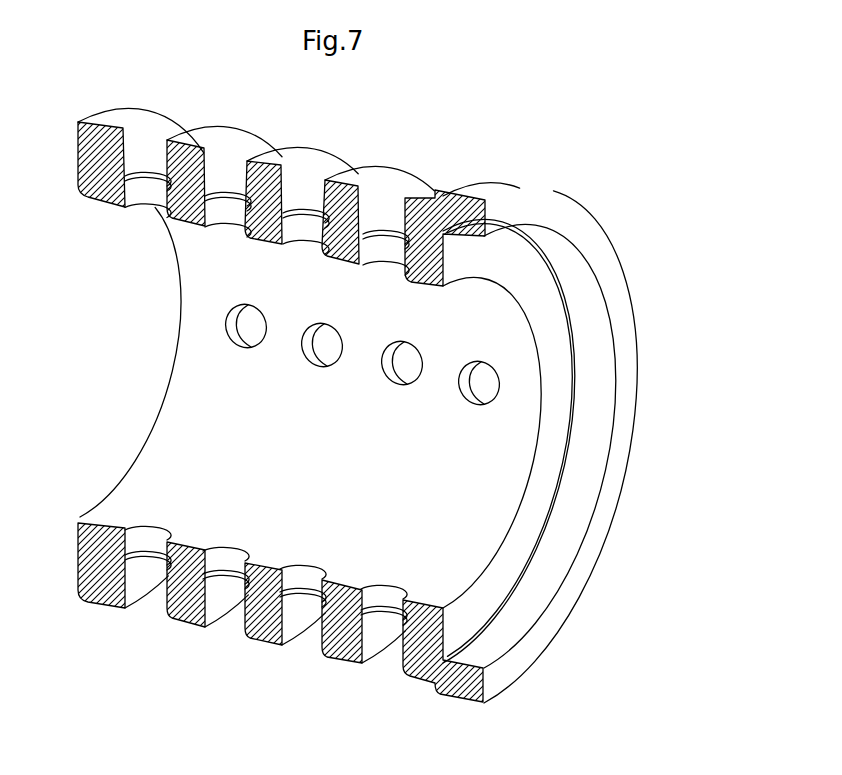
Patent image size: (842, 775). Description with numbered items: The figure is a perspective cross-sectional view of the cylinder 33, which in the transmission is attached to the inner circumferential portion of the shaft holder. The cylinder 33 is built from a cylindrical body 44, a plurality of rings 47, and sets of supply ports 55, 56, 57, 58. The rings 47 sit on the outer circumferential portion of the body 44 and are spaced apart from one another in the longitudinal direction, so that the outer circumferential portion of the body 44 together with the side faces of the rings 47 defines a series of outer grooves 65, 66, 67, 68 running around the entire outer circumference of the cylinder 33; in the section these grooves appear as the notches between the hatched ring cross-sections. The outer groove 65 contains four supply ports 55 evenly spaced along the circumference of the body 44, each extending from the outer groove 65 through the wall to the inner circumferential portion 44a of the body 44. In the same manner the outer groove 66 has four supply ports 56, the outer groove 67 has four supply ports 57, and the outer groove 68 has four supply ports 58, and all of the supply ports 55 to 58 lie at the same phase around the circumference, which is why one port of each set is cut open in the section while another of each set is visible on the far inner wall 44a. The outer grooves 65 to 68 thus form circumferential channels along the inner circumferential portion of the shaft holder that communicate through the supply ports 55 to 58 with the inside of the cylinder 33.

The cylinder 33 is at (643, 286).
The body 44 is at (538, 490).
The inner circumferential portion 44a is at (183, 432).
The rings 47 is at (100, 587).
The supply ports 55 is at (388, 256).
The supply ports 56 is at (311, 238).
The supply ports 57 is at (233, 216).
The supply ports 58 is at (157, 200).
The outer groove 65 is at (389, 201).
The outer groove 66 is at (309, 185).
The outer groove 67 is at (231, 165).
The outer groove 68 is at (154, 146).